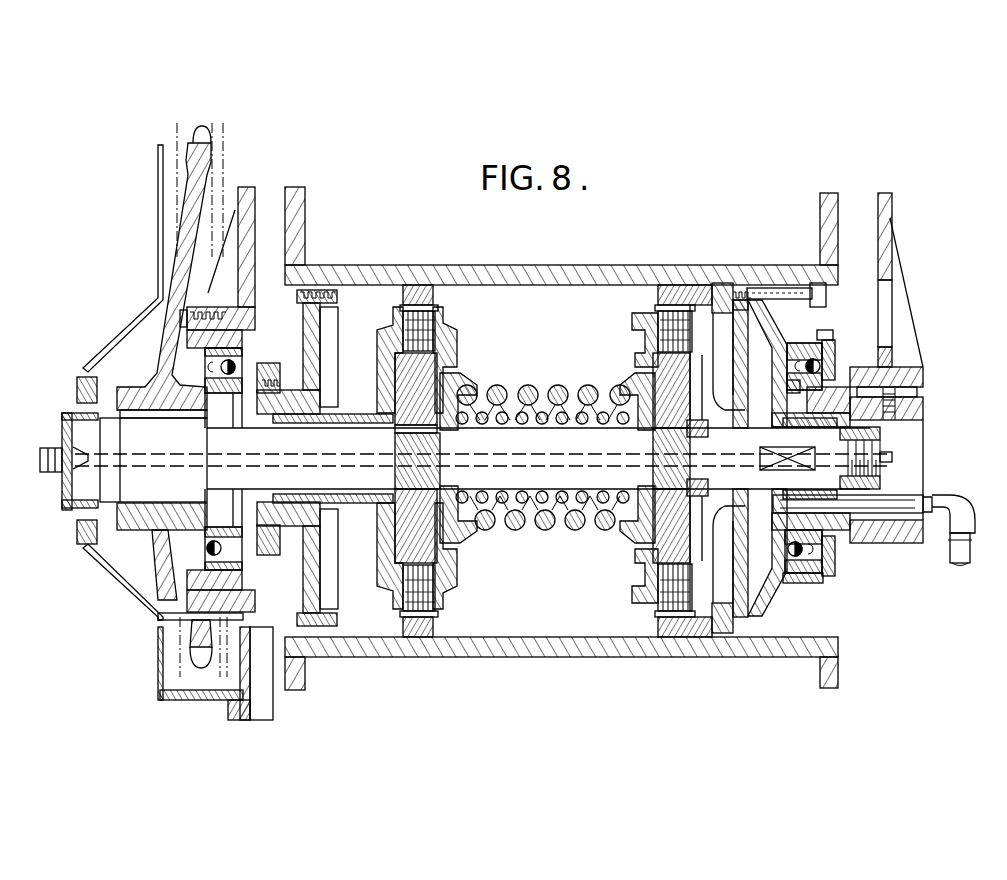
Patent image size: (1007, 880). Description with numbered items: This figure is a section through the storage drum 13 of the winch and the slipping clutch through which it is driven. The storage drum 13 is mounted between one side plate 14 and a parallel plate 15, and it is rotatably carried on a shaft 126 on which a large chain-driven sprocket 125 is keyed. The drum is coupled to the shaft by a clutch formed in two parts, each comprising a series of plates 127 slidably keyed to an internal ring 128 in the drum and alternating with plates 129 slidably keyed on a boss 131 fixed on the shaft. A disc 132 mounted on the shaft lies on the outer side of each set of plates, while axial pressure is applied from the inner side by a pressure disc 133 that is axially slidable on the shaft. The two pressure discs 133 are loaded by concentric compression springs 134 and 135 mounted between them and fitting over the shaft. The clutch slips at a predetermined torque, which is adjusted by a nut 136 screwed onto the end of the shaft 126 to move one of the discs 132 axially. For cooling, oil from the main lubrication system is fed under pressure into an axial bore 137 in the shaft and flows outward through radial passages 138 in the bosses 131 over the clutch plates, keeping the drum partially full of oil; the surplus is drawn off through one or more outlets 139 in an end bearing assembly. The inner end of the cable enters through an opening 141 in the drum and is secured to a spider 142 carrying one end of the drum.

The storage drum 13 is at (703, 265).
The side plate 14 is at (250, 218).
The parallel plate 15 is at (892, 205).
The sprocket 125 is at (190, 208).
The shaft 126 is at (328, 489).
The plates 127 is at (438, 308).
The internal ring 128 is at (410, 285).
The plates 129 is at (338, 411).
The boss 131 is at (428, 372).
The disc 132 is at (395, 322).
The pressure disc 133 is at (438, 322).
The compression spring 134 is at (532, 374).
The compression spring 135 is at (572, 410).
The nut 136 is at (873, 437).
The axial bore 137 is at (286, 452).
The radial passages 138 is at (440, 562).
The outlet 139 is at (966, 508).
The opening 141 is at (805, 270).
The spider 142 is at (770, 314).